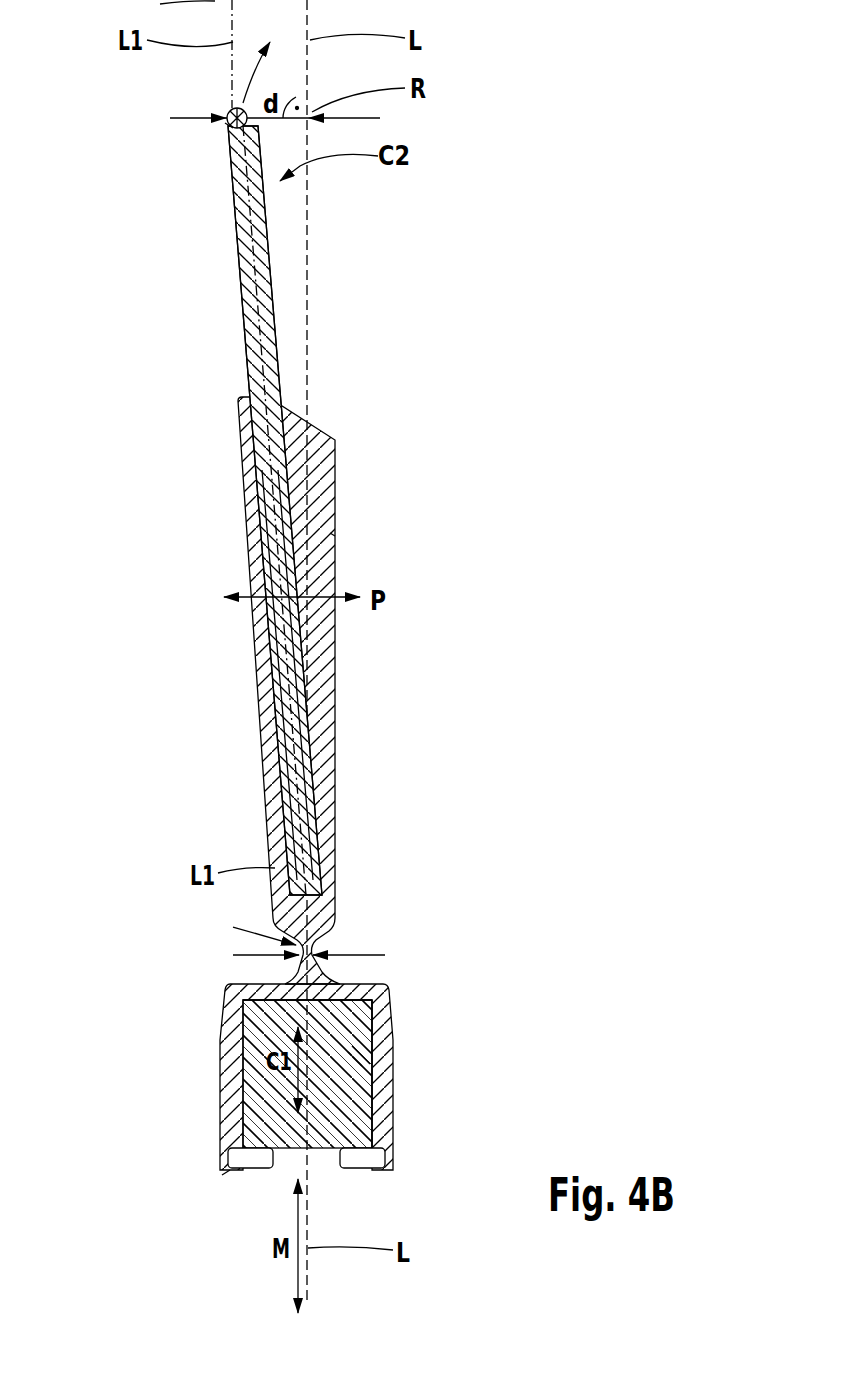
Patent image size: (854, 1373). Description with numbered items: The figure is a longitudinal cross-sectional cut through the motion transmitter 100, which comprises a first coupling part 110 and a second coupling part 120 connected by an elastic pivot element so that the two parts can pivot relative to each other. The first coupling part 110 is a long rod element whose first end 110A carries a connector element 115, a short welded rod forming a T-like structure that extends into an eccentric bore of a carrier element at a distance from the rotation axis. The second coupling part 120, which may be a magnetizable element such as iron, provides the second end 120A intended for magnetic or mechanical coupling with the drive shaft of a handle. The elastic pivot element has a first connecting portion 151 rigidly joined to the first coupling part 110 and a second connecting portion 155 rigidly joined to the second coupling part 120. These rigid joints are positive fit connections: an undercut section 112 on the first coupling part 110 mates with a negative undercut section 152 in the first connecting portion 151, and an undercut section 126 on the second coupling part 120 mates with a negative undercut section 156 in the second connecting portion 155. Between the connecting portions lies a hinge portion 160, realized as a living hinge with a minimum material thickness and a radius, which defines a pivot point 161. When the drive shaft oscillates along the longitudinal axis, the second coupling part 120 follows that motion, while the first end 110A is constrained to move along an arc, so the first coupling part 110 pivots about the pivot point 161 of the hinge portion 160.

The motion transmitter 100 is at (442, 230).
The first coupling part 110 is at (240, 272).
The first end 110A is at (216, 128).
The undercut section 112 is at (331, 533).
The connector element 115 is at (228, 108).
The second coupling part 120 is at (265, 1130).
The second end 120A is at (224, 1182).
The undercut section 126 is at (356, 1050).
The first connecting portion 151 is at (320, 432).
The undercut section 152 is at (300, 505).
The second connecting portion 155 is at (380, 1128).
The undercut section 156 is at (372, 1075).
The hinge portion 160 is at (234, 945).
The pivot point 161 is at (340, 975).